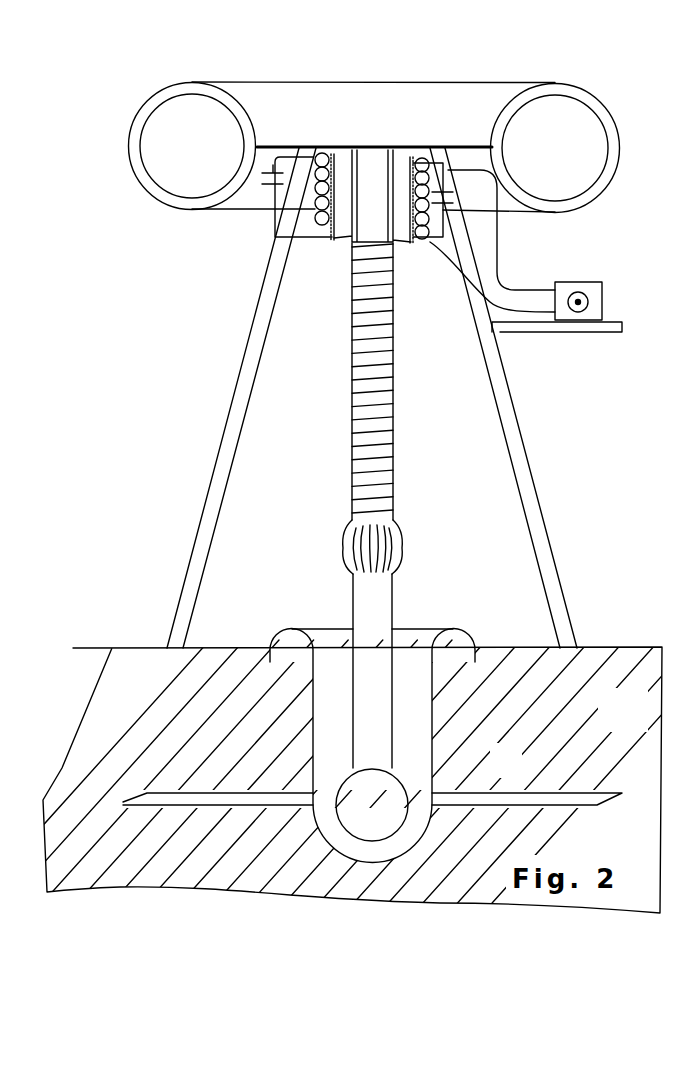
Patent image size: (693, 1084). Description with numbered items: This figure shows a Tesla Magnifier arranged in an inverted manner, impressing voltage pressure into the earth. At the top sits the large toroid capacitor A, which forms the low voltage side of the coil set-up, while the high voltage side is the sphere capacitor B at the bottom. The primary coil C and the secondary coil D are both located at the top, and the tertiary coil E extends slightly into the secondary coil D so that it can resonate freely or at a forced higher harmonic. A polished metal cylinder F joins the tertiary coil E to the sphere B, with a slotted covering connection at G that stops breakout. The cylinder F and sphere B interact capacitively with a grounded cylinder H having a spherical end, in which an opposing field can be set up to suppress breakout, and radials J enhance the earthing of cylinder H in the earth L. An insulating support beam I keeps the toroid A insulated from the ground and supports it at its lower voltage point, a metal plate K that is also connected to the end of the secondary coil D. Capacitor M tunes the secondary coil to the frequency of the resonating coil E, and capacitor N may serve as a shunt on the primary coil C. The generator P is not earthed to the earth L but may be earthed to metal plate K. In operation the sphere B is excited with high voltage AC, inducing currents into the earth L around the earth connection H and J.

The top capacitor toroid A is at (152, 195).
The high voltage capacitor sphere B is at (372, 805).
The primary coil C is at (318, 223).
The secondary coil D is at (416, 246).
The tertiary coil E is at (396, 430).
The polished metal cylinder F is at (393, 607).
The slotted covering connection G is at (405, 546).
The grounded cylinder H is at (432, 718).
The support beam I is at (542, 488).
The radials J is at (517, 793).
The metal plate K is at (443, 147).
The earth L is at (640, 724).
The capacitor M is at (268, 187).
The capacitor N is at (450, 186).
The generator P is at (606, 302).